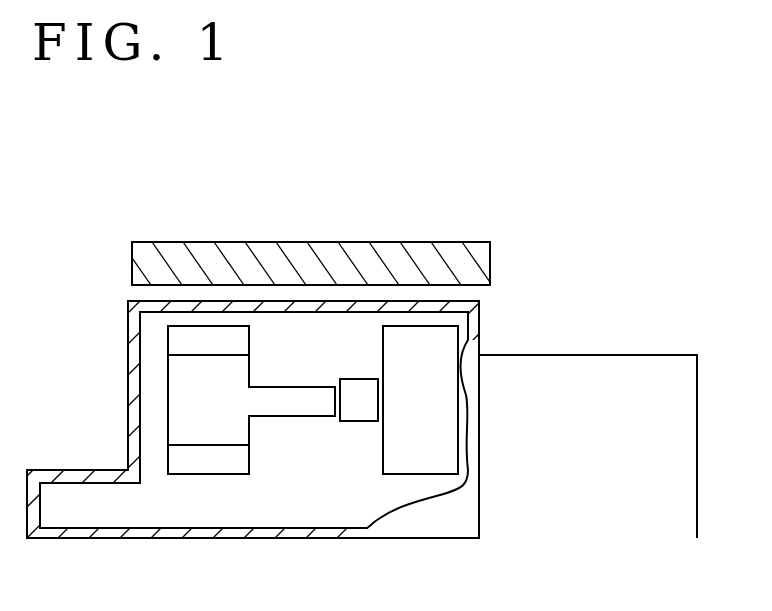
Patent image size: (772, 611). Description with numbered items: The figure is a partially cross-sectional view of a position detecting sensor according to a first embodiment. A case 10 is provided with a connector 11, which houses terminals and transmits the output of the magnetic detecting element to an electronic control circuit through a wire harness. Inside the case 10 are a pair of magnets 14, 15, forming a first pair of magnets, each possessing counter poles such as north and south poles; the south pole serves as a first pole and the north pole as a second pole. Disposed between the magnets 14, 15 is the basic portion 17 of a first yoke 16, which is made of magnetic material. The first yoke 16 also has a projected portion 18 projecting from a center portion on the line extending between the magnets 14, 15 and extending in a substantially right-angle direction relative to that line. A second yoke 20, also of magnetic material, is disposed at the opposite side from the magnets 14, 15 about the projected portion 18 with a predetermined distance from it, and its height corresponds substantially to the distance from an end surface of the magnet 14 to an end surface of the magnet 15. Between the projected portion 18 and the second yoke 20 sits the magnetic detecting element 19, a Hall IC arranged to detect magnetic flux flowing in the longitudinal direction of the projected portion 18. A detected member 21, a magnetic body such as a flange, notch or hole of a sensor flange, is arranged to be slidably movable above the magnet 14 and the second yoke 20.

The case 10 is at (477, 318).
The connector 11 is at (622, 360).
The magnet 14 is at (183, 340).
The magnet 15 is at (197, 468).
The first yoke 16 is at (267, 373).
The basic portion 17 is at (180, 392).
The projected portion 18 is at (292, 392).
The magnetic detecting element 19 is at (360, 422).
The second yoke 20 is at (392, 461).
The detected member 21 is at (413, 240).